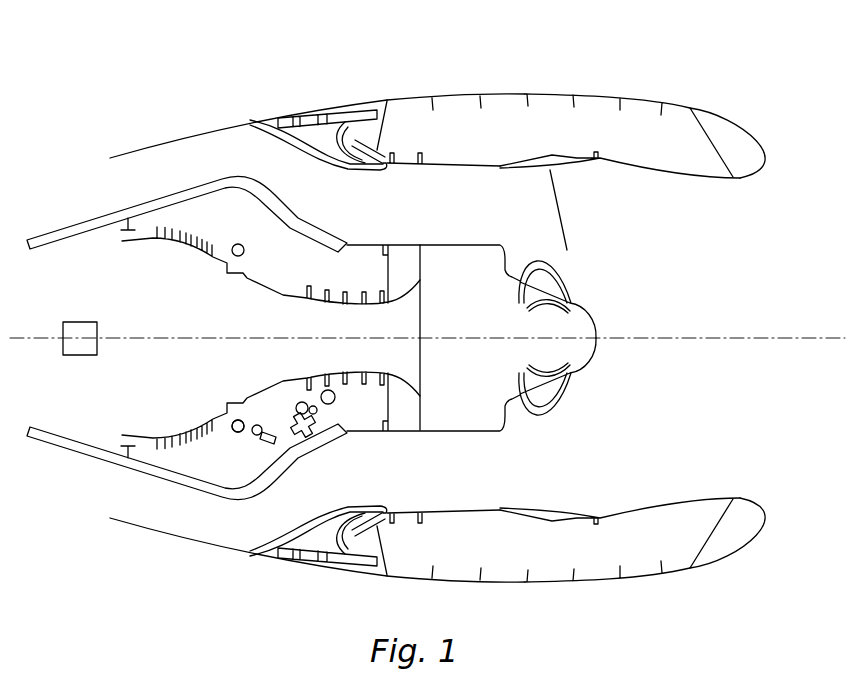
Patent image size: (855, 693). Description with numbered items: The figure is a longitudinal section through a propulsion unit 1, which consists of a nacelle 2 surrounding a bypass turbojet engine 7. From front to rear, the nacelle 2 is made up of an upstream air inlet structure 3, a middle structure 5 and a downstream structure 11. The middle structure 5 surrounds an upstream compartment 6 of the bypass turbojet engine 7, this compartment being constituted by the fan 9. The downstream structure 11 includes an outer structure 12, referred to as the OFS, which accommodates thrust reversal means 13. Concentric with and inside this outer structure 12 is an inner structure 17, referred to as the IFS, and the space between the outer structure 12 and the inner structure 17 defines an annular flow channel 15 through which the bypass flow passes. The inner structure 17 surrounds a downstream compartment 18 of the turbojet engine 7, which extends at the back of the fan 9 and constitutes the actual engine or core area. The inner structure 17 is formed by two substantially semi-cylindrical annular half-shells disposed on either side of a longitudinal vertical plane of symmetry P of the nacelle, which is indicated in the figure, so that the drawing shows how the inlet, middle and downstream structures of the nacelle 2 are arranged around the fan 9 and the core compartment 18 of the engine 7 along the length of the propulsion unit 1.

The propulsion unit 1 is at (459, 308).
The nacelle 2 is at (521, 90).
The upstream air inlet structure 3 is at (761, 128).
The middle structure 5 is at (448, 90).
The upstream compartment 6 is at (460, 398).
The bypass turbojet engine 7 is at (282, 359).
The fan 9 is at (497, 398).
The downstream structure 11 is at (273, 113).
The outer structure 12 is at (255, 112).
The thrust reversal means 13 is at (328, 143).
The annular flow channel 15 is at (167, 170).
The inner structure 17 is at (138, 203).
The downstream compartment 18 is at (307, 231).
The longitudinal vertical plane of symmetry P is at (89, 345).